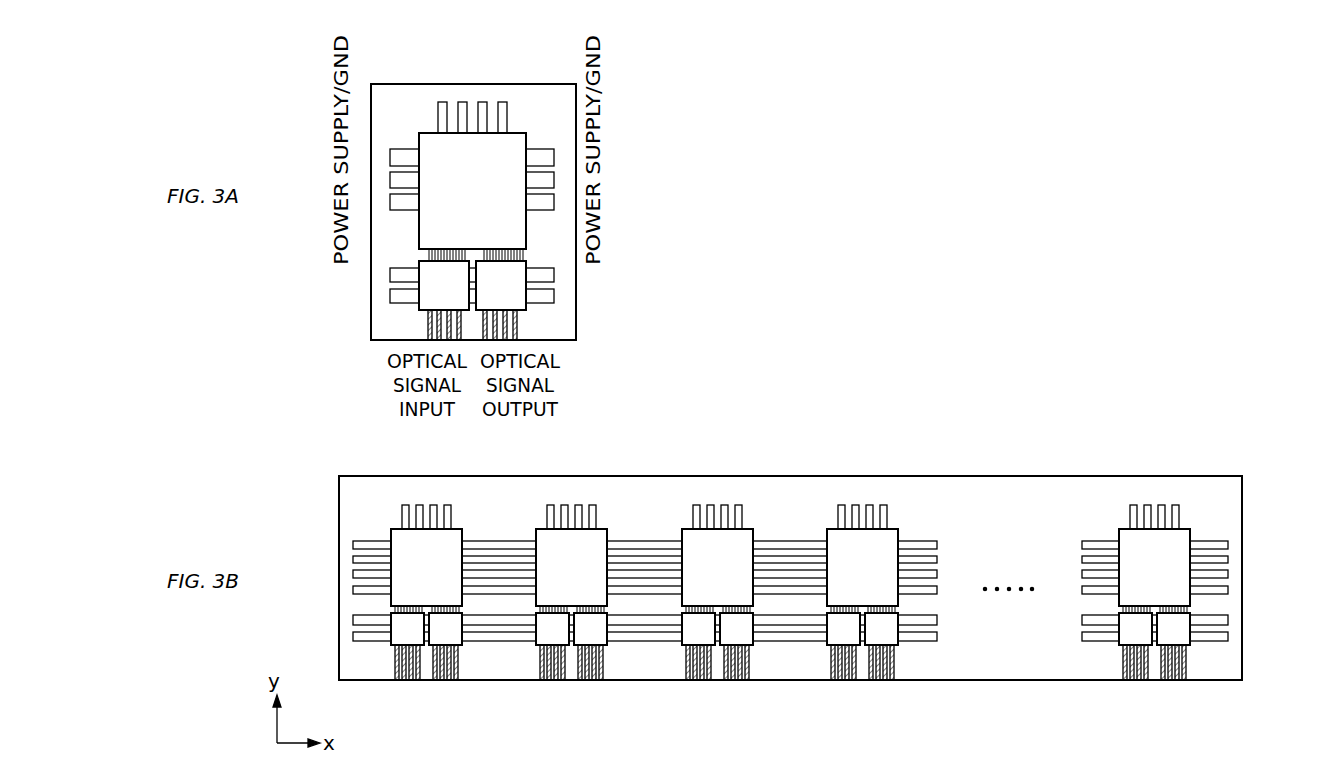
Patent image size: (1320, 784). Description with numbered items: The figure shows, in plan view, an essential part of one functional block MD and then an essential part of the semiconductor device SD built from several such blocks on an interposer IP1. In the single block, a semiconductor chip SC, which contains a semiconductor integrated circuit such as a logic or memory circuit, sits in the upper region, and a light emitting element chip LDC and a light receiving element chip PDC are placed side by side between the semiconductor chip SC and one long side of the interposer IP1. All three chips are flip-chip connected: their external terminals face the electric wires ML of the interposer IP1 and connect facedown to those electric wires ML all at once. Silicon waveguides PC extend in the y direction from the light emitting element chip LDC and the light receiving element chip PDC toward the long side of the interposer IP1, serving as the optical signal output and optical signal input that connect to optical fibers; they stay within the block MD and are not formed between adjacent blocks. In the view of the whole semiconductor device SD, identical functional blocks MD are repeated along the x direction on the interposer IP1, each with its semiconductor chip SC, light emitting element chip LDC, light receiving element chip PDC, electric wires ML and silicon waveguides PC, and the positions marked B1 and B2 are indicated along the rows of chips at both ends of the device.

In FIG. 3A, the electric wire ML is at (408, 155).
In FIG. 3B, the electric wire ML is at (740, 530).
In FIG. 3A, the semiconductor chip SC is at (515, 140).
In FIG. 3B, the semiconductor chip SC is at (425, 570).
In FIG. 3A, the functional block MD is at (543, 80).
In FIG. 3B, the functional block MD is at (645, 467).
In FIG. 3A, the light emitting element chip LDC is at (515, 287).
In FIG. 3B, the light emitting element chip LDC is at (455, 630).
In FIG. 3A, the light receiving element chip PDC is at (440, 287).
In FIG. 3B, the light receiving element chip PDC is at (398, 630).
In FIG. 3A, the silicon waveguide PC is at (430, 326).
In FIG. 3B, the silicon waveguide PC is at (410, 680).
In FIG. 3B, the semiconductor device SD is at (1040, 452).
In FIG. 3B, the interposer IP1 is at (1218, 470).
In FIG. 3B, the first cross-section line B1 is at (339, 562).
In FIG. 3B, the second cross-section line B2 is at (339, 665).